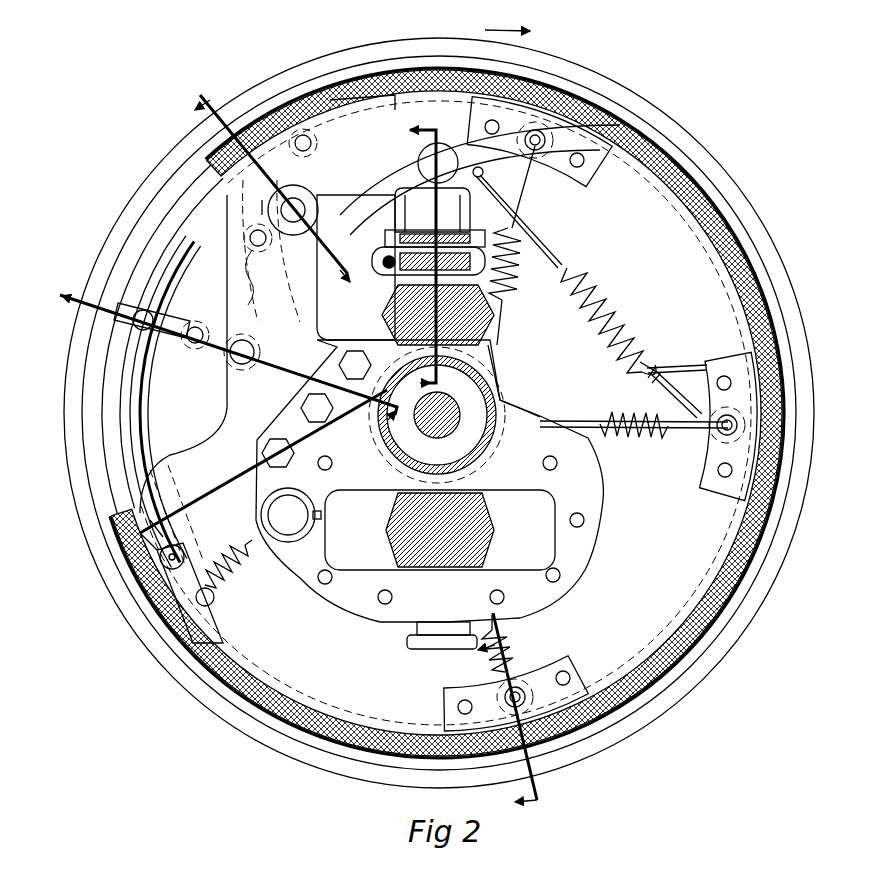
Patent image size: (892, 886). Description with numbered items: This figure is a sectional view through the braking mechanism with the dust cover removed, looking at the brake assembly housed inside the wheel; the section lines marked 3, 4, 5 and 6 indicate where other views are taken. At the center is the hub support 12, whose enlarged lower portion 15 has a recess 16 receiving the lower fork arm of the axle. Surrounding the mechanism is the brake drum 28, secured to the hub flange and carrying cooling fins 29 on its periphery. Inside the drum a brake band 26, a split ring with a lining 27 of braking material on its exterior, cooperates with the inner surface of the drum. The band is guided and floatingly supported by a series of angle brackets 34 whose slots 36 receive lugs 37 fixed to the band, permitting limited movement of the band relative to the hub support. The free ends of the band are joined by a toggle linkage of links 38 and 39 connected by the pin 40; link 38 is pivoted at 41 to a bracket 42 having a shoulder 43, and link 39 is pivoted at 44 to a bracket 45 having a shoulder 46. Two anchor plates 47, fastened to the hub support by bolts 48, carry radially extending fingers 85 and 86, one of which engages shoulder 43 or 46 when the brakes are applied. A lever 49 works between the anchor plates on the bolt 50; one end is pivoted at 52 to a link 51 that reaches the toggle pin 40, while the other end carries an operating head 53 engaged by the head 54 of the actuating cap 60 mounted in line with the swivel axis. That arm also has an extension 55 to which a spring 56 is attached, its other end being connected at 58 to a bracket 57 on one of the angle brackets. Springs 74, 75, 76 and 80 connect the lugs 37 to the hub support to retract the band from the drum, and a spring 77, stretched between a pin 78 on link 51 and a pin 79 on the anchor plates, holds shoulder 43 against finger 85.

The section line 3- 3 is at (414, 256).
The section line 4- 4 is at (263, 192).
The section line 5- 5 is at (224, 366).
The section line 6- 6 is at (496, 714).
The hub support 12 is at (505, 395).
The enlarged lower portion 15 is at (577, 500).
The recess 16 is at (507, 517).
The brake band 26 is at (632, 670).
The lining 27 is at (740, 232).
The brake drum 28 is at (653, 688).
The fins 29 is at (716, 650).
The angle brackets 34 is at (707, 480).
The slots 36 is at (562, 130).
The lugs 37 is at (540, 135).
The link 38 is at (133, 420).
The link 39 is at (173, 243).
The pin 40 is at (133, 297).
The pivot 41 is at (184, 553).
The bracket 42 is at (192, 577).
The shoulder 43 is at (177, 547).
The pivot 44 is at (306, 130).
The bracket 45 is at (360, 90).
The shoulder 46 is at (262, 200).
The anchor plates 47 is at (310, 328).
The bolts 48 is at (278, 440).
The lever 49 is at (355, 180).
The bolt 50 is at (313, 187).
The link 51 is at (172, 340).
The pivot 52 is at (258, 352).
The operating head 53 is at (443, 143).
The head 54 is at (405, 195).
The extension 55 is at (485, 170).
The spring 56 is at (575, 270).
The bracket 57 is at (680, 383).
The spring connection 58 is at (660, 365).
The actuating cap 60 is at (455, 215).
The spring 74 is at (663, 437).
The spring 75 is at (513, 647).
The spring 76 is at (237, 553).
The spring 77 is at (172, 245).
The pin 78 is at (198, 322).
The pin 79 is at (250, 230).
The spring 80 is at (510, 262).
The finger 85 is at (163, 537).
The finger 86 is at (258, 228).